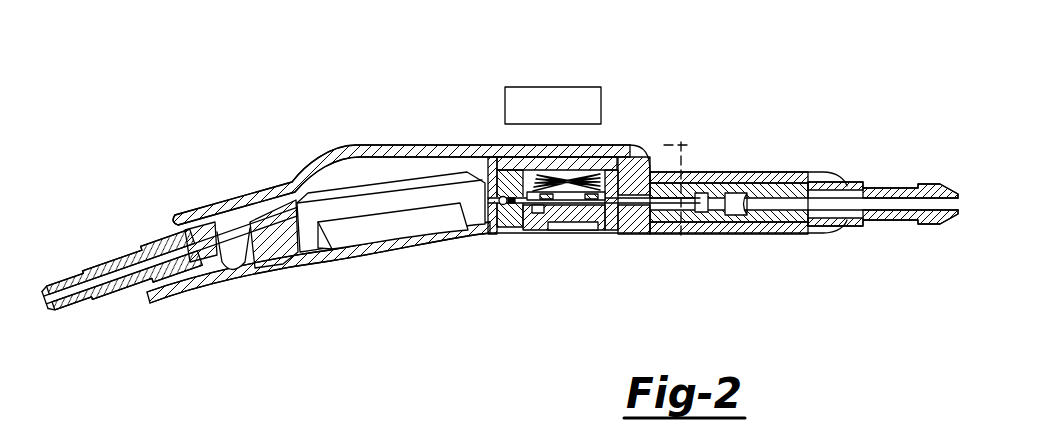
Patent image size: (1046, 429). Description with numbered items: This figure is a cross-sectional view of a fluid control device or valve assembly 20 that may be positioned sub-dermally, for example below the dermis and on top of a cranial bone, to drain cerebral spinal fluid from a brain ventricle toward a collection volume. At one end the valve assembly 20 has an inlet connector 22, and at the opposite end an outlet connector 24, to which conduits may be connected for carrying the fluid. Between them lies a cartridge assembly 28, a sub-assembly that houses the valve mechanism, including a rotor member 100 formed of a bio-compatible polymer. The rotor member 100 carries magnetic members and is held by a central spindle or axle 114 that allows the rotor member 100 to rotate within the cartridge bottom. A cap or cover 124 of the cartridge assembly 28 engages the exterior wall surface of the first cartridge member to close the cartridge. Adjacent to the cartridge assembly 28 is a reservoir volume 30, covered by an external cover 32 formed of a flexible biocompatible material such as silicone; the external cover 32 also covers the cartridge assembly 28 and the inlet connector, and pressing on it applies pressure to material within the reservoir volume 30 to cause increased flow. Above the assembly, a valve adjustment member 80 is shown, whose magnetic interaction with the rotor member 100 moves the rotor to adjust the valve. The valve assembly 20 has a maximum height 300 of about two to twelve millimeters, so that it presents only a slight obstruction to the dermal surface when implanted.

The valve assembly 20 is at (278, 121).
The inlet connector 22 is at (94, 270).
The outlet connector 24 is at (897, 187).
The cartridge assembly 28 is at (483, 164).
The reservoir volume 30 is at (389, 169).
The external cover 32 is at (304, 189).
The valve adjustment member 80 is at (552, 87).
The rotor member 100 is at (562, 204).
The axle 114 is at (578, 204).
The cover 124 is at (604, 204).
The maximum height 300 is at (700, 240).